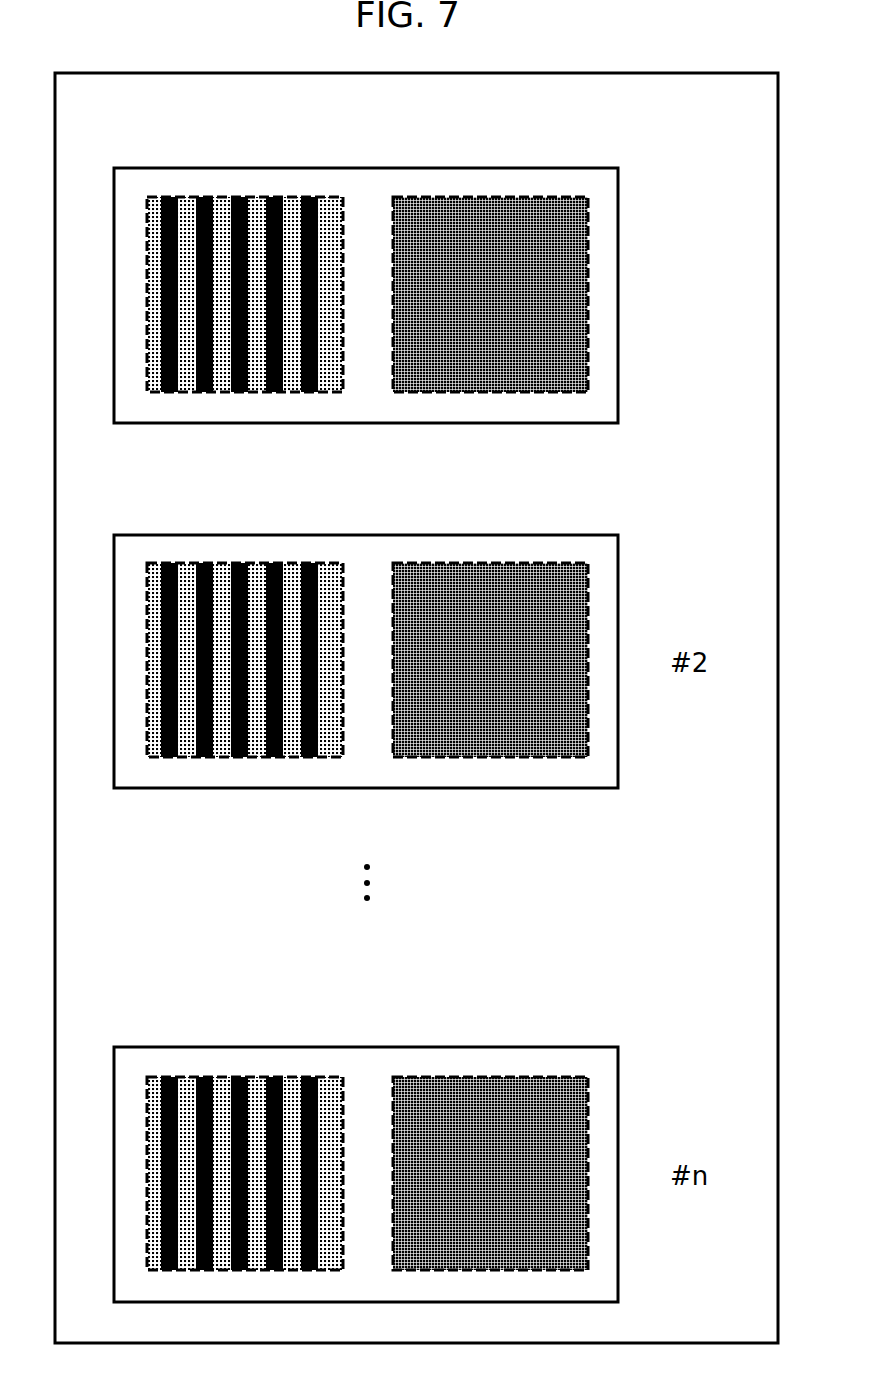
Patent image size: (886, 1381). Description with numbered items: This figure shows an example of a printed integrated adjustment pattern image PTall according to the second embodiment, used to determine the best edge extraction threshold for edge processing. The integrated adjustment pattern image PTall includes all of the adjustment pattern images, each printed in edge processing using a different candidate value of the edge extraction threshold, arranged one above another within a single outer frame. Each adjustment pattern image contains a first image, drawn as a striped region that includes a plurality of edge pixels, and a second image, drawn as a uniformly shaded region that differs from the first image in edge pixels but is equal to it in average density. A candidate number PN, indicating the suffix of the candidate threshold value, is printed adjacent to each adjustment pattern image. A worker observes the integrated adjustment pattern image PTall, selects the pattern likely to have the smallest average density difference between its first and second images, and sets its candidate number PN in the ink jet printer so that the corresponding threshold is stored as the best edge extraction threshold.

The integrated adjustment pattern image PTall is at (682, 73).
The candidate number PN is at (690, 274).